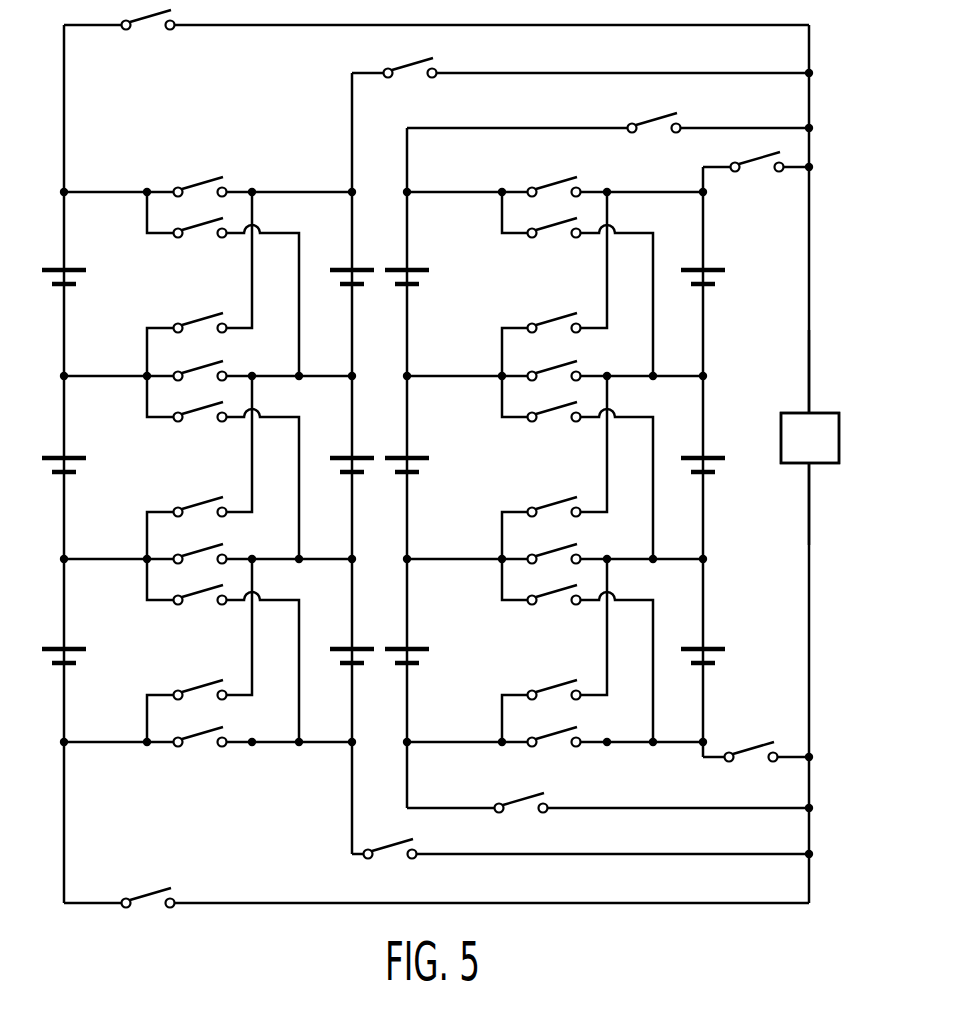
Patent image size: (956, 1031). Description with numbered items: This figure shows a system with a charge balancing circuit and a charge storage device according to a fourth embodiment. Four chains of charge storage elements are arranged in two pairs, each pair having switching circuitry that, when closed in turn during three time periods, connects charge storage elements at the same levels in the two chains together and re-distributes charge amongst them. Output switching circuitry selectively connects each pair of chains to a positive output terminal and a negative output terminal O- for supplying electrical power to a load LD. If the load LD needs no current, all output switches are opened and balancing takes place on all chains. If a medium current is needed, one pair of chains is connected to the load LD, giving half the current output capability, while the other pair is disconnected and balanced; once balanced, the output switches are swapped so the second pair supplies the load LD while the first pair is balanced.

The load LD is at (810, 438).
The output terminal O- is at (823, 518).